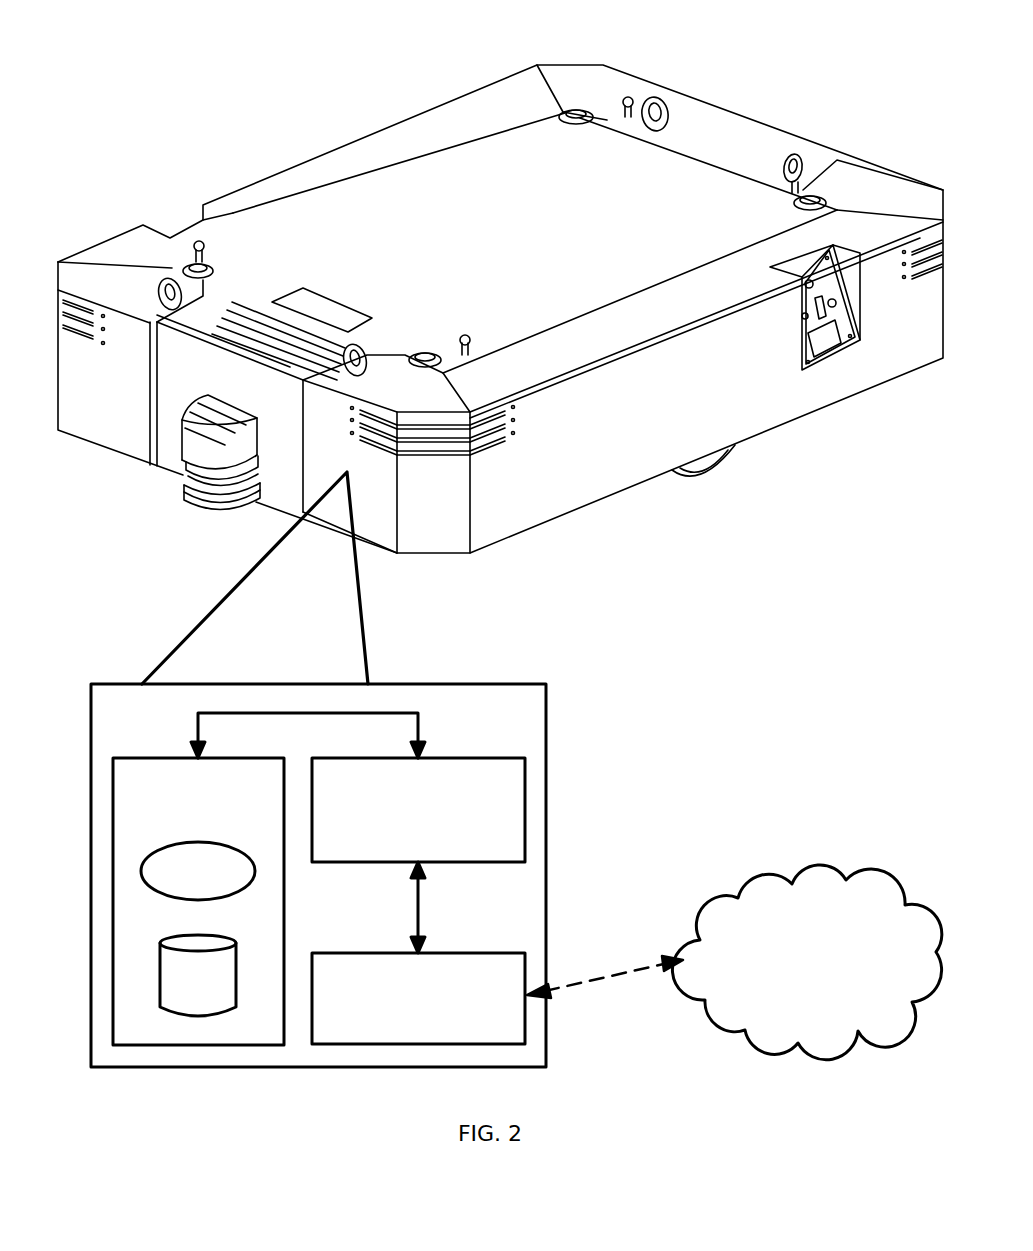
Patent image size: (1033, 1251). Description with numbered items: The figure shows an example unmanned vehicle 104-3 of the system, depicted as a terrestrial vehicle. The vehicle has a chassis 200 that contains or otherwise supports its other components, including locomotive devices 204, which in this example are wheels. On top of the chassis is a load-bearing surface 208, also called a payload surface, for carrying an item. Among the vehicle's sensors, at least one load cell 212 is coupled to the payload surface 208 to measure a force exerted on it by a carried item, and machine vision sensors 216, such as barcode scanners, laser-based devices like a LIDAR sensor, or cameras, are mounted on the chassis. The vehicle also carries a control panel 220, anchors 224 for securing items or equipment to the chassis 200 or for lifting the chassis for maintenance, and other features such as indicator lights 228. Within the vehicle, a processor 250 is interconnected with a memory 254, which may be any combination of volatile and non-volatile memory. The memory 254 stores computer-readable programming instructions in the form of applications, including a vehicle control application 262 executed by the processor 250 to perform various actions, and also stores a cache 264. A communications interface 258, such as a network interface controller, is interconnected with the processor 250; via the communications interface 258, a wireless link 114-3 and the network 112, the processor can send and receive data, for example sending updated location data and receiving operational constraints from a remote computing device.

The chassis 200 is at (863, 177).
The locomotive devices 204 is at (714, 465).
The load-bearing surface 208 is at (483, 240).
The load cell 212 is at (568, 110).
The machine vision sensors 216 is at (190, 493).
The control panel 220 is at (830, 340).
The anchors 224 is at (659, 103).
The indicator lights 228 is at (505, 440).
The unmanned vehicle 104-3 is at (160, 600).
The wireless link 114-3 is at (605, 962).
The network 112 is at (787, 962).
The processor 250 is at (400, 808).
The memory 254 is at (180, 793).
The communications interface 258 is at (400, 986).
The vehicle control application 262 is at (180, 883).
The cache 264 is at (180, 989).